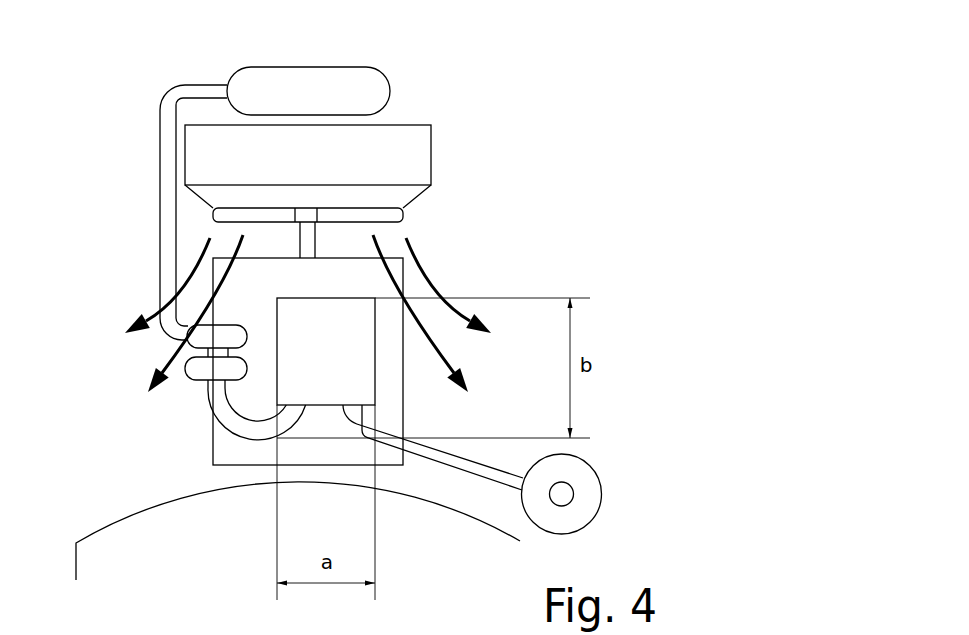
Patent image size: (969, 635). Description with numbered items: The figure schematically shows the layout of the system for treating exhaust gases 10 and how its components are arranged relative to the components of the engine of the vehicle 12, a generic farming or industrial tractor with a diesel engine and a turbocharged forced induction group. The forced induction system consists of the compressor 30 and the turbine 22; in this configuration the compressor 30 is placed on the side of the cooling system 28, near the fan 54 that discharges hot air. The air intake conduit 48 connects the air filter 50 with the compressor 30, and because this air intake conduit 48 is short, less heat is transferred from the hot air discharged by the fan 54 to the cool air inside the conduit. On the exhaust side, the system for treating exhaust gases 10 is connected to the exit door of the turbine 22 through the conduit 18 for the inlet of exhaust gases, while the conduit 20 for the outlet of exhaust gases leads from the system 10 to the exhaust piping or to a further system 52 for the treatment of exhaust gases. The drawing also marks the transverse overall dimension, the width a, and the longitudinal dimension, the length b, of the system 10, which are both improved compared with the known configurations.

The system for treating exhaust gases 10 is at (409, 256).
The vehicle 12 is at (105, 530).
The conduit for the inlet of exhaust gases 18 is at (225, 412).
The conduit for the outlet of exhaust gases 20 is at (488, 470).
The turbine 22 is at (200, 392).
The cooling system 28 is at (418, 135).
The compressor 30 is at (182, 340).
The air intake conduit 48 is at (163, 113).
The air filter 50 is at (250, 76).
The further system for the treatment of exhaust gases 52 is at (602, 498).
The fan 54 is at (400, 217).